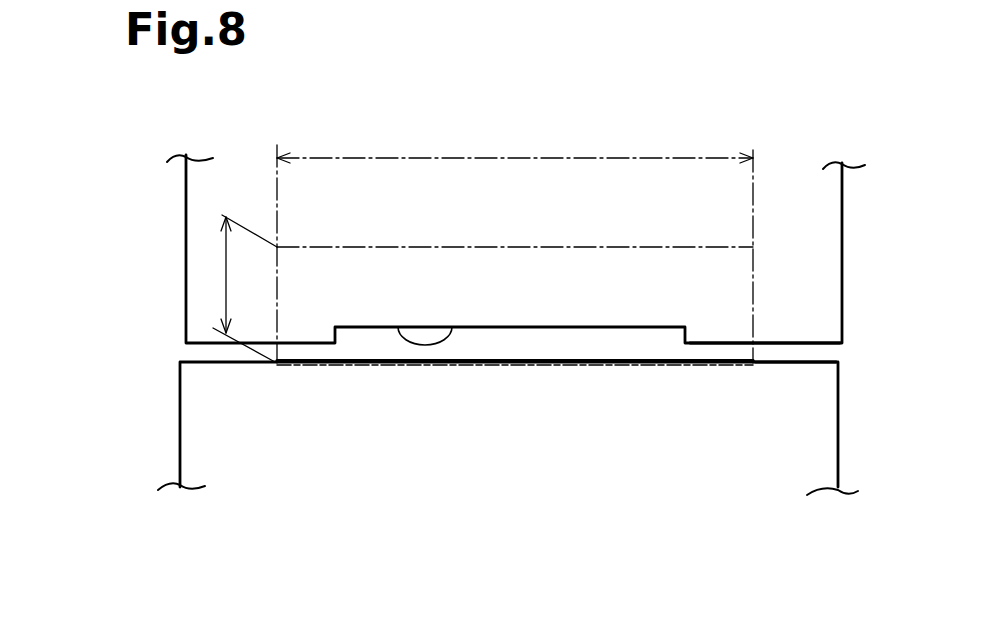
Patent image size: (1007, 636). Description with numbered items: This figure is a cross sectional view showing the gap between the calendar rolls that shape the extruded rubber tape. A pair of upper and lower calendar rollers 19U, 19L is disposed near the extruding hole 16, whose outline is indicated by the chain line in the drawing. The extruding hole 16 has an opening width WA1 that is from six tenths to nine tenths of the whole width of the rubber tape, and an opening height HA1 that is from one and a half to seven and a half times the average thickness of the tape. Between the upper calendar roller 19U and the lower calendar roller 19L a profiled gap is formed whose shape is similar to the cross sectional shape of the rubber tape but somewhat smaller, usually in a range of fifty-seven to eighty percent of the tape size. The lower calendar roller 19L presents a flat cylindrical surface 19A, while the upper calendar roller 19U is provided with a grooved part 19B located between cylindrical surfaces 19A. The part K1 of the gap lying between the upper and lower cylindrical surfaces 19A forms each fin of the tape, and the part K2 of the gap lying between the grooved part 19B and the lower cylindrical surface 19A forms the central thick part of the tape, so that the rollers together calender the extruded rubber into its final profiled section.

The upper calendar roller 19U is at (843, 252).
The lower calendar roller 19L is at (838, 440).
The cylindrical surfaces 19A is at (843, 344).
The grooved part 19B is at (450, 327).
The extruding hole 16 is at (588, 247).
The part of the gap K2 is at (570, 347).
The part of the gap K1 is at (715, 350).
The opening width WA1 is at (525, 158).
The opening height HA1 is at (226, 285).